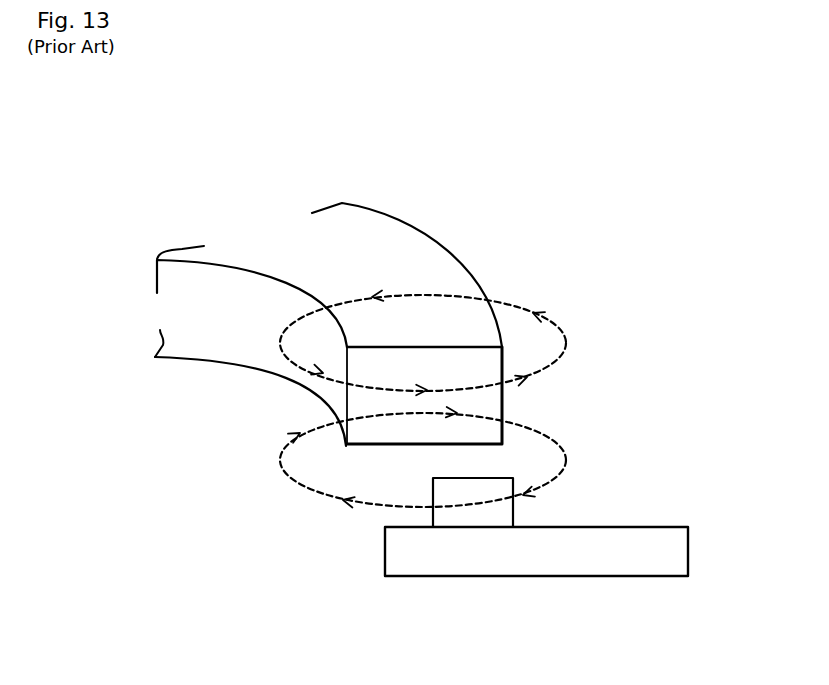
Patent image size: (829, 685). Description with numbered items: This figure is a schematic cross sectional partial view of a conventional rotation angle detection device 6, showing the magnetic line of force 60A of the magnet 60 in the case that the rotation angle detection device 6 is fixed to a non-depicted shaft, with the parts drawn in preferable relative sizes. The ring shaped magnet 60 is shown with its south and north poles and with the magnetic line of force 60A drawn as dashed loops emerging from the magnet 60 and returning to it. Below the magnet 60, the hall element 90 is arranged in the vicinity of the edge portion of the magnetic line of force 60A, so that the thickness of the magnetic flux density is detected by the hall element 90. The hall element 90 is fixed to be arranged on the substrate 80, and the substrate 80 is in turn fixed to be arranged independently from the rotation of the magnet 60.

The rotation angle detection device 6 is at (452, 150).
The magnet 60 is at (461, 261).
The magnetic line of force 60A is at (567, 346).
The hall element 90 is at (513, 512).
The substrate 80 is at (458, 577).